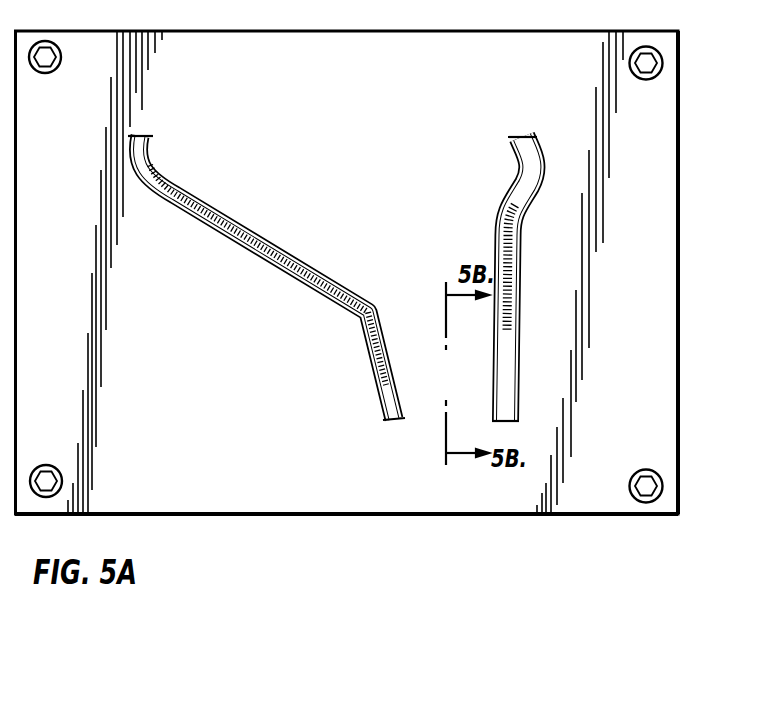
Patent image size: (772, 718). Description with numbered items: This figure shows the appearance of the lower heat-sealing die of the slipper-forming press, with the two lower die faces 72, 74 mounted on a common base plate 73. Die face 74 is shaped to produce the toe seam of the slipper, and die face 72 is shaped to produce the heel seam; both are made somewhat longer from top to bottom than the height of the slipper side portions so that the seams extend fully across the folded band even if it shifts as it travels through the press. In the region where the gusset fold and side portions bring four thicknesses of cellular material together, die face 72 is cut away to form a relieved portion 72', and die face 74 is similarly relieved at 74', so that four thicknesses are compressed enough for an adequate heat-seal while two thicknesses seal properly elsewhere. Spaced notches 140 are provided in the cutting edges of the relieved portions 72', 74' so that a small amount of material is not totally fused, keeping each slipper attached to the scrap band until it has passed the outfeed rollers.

The mounting plate 73 is at (640, 357).
The lower die face 74 is at (261, 277).
The relieved portion of die face 74' is at (371, 384).
The lower die face 72 is at (501, 279).
The relieved portion of die face 72' is at (523, 387).
The spaced notches 140 is at (378, 331).